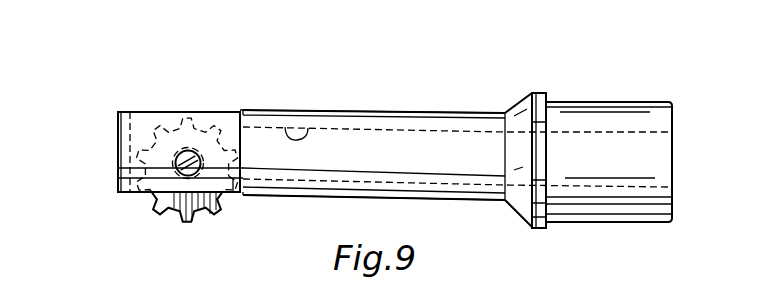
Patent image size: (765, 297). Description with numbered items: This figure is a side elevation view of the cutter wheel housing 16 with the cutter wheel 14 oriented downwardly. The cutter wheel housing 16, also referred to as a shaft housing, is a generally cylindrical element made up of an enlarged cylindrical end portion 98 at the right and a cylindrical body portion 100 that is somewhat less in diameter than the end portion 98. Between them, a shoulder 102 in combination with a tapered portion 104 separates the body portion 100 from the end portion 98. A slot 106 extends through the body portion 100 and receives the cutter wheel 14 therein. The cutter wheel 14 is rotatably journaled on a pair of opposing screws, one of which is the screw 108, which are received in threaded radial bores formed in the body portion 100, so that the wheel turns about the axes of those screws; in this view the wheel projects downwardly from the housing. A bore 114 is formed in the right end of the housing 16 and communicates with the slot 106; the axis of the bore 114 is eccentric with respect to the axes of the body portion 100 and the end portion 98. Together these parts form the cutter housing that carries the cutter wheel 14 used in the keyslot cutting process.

The cutter wheel 14 is at (223, 208).
The cutter wheel housing 16 is at (442, 110).
The enlarged cylindrical end portion 98 is at (641, 115).
The cylindrical body portion 100 is at (372, 115).
The shoulder 102 is at (552, 95).
The tapered portion 104 is at (516, 104).
The slot 106 is at (122, 110).
The screw 108 is at (168, 213).
The bore 114 is at (305, 110).